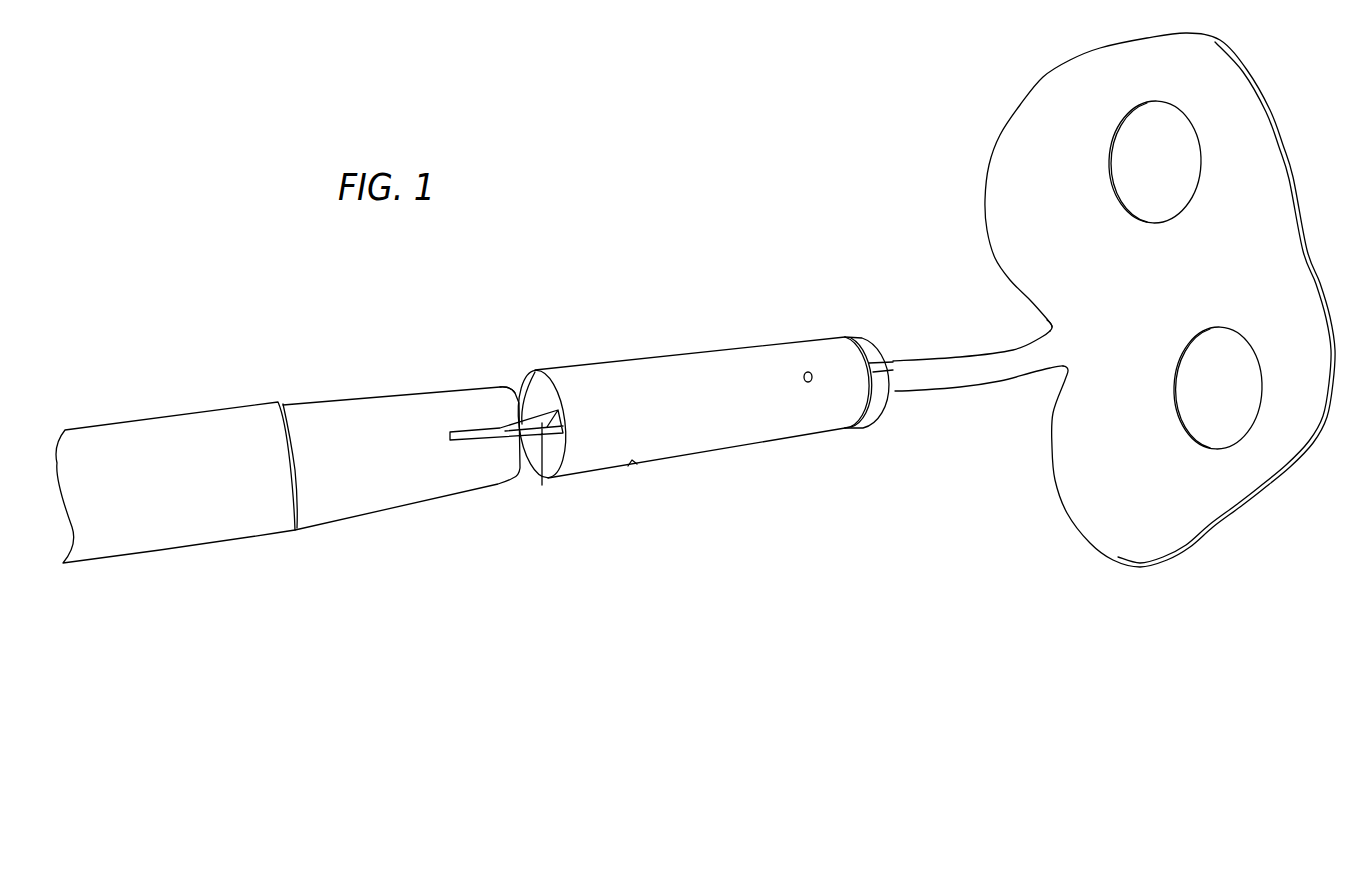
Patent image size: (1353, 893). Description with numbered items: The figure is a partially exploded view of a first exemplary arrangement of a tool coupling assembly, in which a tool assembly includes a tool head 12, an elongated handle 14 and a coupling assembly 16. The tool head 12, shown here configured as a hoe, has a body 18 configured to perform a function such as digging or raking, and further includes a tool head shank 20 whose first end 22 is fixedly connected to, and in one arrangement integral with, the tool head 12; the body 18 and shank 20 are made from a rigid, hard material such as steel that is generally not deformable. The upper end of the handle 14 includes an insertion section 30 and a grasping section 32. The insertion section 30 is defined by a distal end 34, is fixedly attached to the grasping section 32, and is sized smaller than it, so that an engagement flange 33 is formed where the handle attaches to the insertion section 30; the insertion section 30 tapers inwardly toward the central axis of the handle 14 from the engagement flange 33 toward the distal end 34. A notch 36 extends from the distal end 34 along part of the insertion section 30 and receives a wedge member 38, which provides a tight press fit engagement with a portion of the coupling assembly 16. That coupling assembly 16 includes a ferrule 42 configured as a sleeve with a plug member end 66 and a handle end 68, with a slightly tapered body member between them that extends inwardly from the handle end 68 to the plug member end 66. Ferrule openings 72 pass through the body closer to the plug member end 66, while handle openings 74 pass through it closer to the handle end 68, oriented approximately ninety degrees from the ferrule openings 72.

The tool head 12 is at (1115, 300).
The elongated handle 14 is at (309, 461).
The coupling assembly 16 is at (703, 396).
The body 18 is at (1023, 138).
The tool head shank 20 is at (928, 382).
The first end 22 is at (1058, 350).
The insertion section 30 is at (375, 500).
The grasping section 32 is at (153, 430).
The engagement flange 33 is at (283, 407).
The distal end 34 is at (518, 398).
The notch 36 is at (470, 432).
The wedge member 38 is at (548, 478).
The ferrule 42 is at (638, 370).
The plug member end 66 is at (853, 333).
The handle end 68 is at (523, 360).
The ferrule openings 72 is at (806, 372).
The handle openings 74 is at (633, 465).